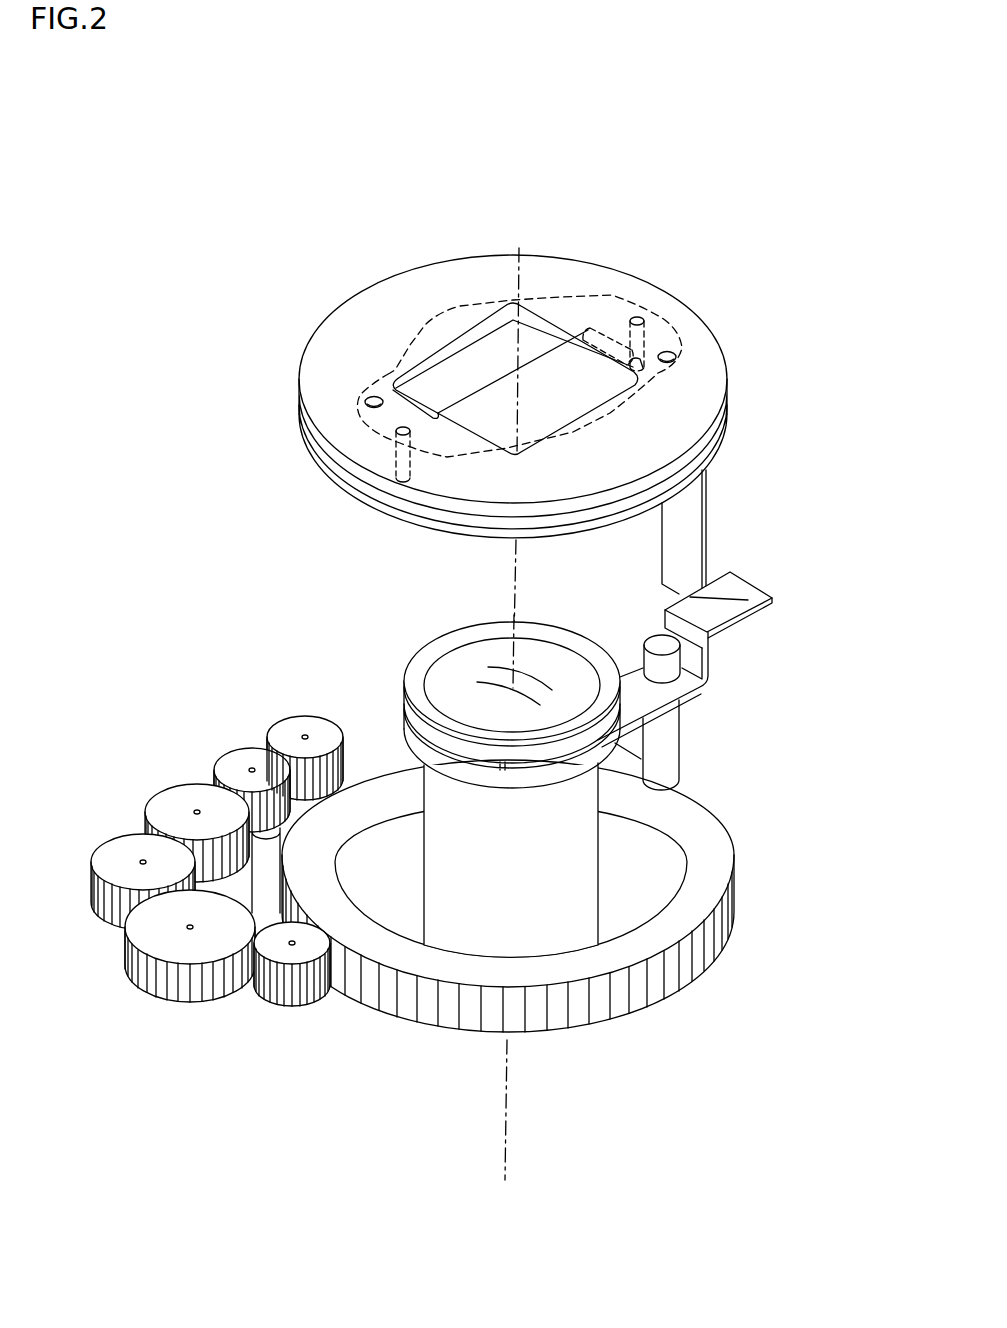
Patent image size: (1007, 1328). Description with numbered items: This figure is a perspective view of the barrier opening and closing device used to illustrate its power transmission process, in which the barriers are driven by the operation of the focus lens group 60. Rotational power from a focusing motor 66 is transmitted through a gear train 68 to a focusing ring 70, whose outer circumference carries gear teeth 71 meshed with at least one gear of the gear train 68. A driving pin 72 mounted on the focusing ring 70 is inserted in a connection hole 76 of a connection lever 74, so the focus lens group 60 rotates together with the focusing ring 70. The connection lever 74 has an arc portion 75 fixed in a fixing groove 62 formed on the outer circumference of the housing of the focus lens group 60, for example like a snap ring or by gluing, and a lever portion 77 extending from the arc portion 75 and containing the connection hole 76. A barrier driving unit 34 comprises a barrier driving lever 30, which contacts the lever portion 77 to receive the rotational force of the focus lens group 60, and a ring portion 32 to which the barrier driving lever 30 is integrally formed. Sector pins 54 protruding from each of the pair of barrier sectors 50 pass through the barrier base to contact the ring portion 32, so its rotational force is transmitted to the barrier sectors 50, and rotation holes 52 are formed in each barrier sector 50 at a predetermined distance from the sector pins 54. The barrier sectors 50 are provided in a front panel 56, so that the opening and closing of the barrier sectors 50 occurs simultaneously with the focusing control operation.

The barrier driving lever 30 is at (707, 502).
The ring portion 32 is at (387, 512).
The barrier driving unit 34 is at (446, 240).
The barrier sectors 50 is at (405, 374).
The rotation holes 52 is at (678, 356).
The sector pins 54 is at (638, 317).
The front panel 56 is at (691, 315).
The focus lens group 60 is at (401, 673).
The fixing groove 62 is at (404, 716).
The focusing motor 66 is at (272, 840).
The gear train 68 is at (72, 781).
The focusing ring 70 is at (632, 1029).
The gear teeth 71 is at (463, 1017).
The driving pin 72 is at (674, 740).
The connection lever 74 is at (762, 588).
The arc portion 75 is at (610, 738).
The connection hole 76 is at (708, 687).
The lever portion 77 is at (742, 608).